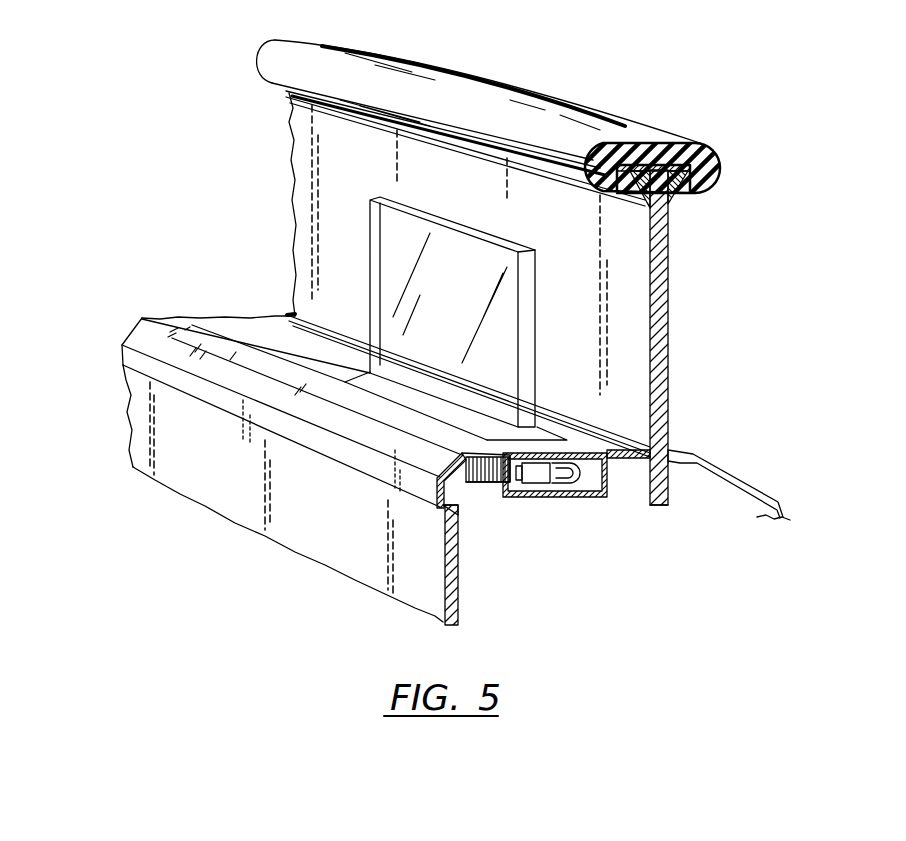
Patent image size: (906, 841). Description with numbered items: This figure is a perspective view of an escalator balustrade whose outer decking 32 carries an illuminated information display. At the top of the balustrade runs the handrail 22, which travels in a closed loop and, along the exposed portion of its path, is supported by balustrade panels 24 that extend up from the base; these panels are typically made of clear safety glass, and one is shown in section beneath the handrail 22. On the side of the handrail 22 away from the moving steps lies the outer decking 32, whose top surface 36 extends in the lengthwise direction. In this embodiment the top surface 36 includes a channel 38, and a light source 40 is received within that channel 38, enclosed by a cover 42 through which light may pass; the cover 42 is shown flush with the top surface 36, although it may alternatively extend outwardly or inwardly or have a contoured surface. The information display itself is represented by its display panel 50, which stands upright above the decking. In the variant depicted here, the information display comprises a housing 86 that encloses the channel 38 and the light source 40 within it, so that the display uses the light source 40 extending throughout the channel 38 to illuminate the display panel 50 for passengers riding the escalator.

The handrail 22 is at (488, 90).
The balustrade panel 24 is at (567, 226).
The outer decking 32 is at (125, 334).
The top surface 36 is at (160, 337).
The channel 38 is at (490, 488).
The light source 40 is at (537, 478).
The cover 42 is at (233, 327).
The display panel 50 is at (472, 282).
The housing 86 is at (393, 390).